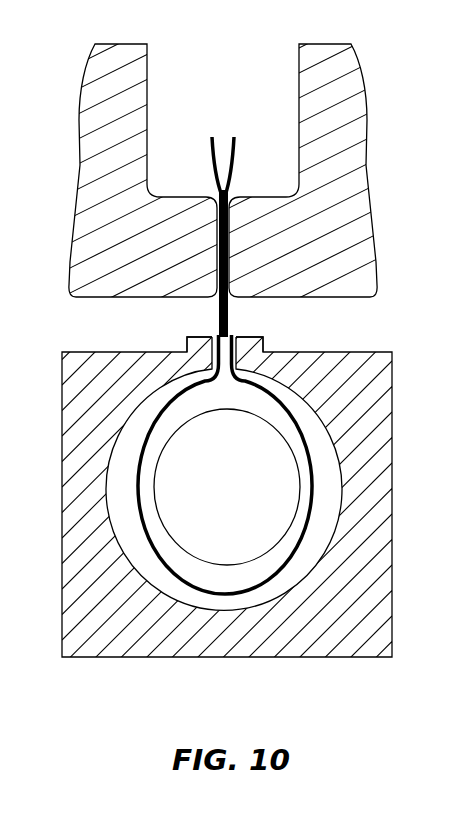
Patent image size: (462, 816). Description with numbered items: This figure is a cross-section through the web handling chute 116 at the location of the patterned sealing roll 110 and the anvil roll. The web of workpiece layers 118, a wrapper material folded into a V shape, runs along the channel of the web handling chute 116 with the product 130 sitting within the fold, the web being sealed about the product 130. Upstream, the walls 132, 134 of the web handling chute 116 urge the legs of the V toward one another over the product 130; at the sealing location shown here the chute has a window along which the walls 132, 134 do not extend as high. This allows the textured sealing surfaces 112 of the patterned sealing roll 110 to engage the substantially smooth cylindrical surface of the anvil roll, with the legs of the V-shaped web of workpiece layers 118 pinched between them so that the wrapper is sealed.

The patterned sealing roll 110 is at (83, 120).
The textured sealing surface 112 is at (217, 227).
The web handling chute 116 is at (378, 428).
The web of workpiece layers 118 is at (288, 408).
The product 130 is at (235, 548).
The wall of the web handling chute 132 is at (264, 345).
The wall of the web handling chute 134 is at (186, 345).